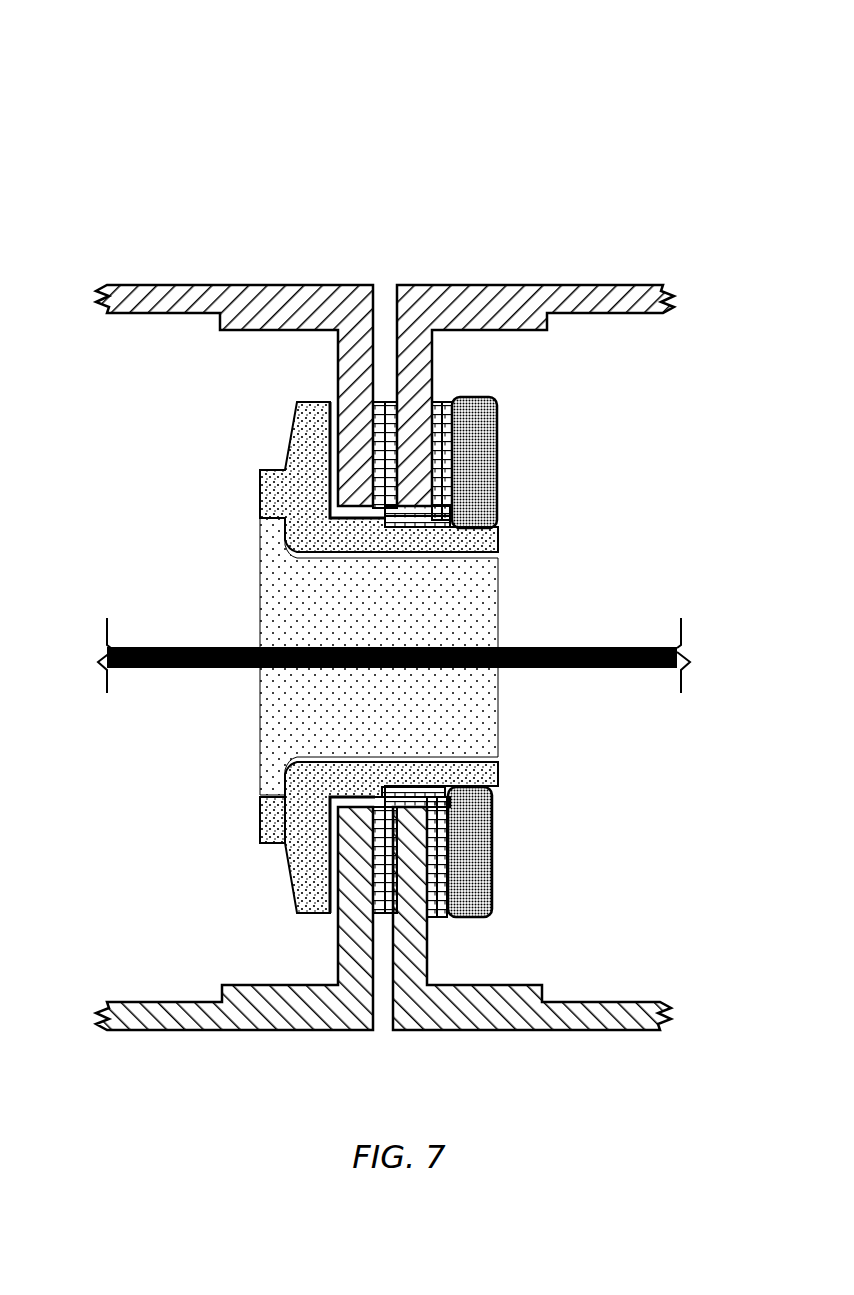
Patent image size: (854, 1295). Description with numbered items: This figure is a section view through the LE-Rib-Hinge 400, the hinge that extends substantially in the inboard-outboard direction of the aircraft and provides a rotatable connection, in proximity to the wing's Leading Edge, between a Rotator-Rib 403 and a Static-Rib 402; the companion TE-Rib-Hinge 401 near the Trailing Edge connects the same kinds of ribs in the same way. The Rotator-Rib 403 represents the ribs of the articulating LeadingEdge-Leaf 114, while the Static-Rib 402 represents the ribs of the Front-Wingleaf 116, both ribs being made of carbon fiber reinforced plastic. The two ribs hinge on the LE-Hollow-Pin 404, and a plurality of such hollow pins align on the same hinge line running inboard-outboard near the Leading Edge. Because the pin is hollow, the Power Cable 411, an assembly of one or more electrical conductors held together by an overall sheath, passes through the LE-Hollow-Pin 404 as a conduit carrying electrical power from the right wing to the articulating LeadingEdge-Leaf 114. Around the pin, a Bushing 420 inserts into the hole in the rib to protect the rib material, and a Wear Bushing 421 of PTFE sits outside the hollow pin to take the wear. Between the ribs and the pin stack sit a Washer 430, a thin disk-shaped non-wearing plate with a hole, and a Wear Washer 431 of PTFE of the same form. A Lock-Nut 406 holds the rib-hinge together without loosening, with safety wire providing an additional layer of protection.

The LE-Rib-Hinge 400 is at (150, 52).
The LeadingEdge-Leaf 114 is at (387, 247).
The Front-Wingleaf 116 is at (385, 247).
The TE-Rib-Hinge 401 is at (428, 935).
The Static-Rib 402 is at (338, 364).
The Rotator-Rib 403 is at (432, 367).
The LE-Hollow-Pin 404 is at (260, 568).
The Lock-Nut 406 is at (493, 850).
The Power Cable 411 is at (505, 678).
The Bushing 420 is at (328, 802).
The Wear Bushing 421 is at (450, 802).
The Washer 430 is at (336, 400).
The Wear Washer 431 is at (437, 401).